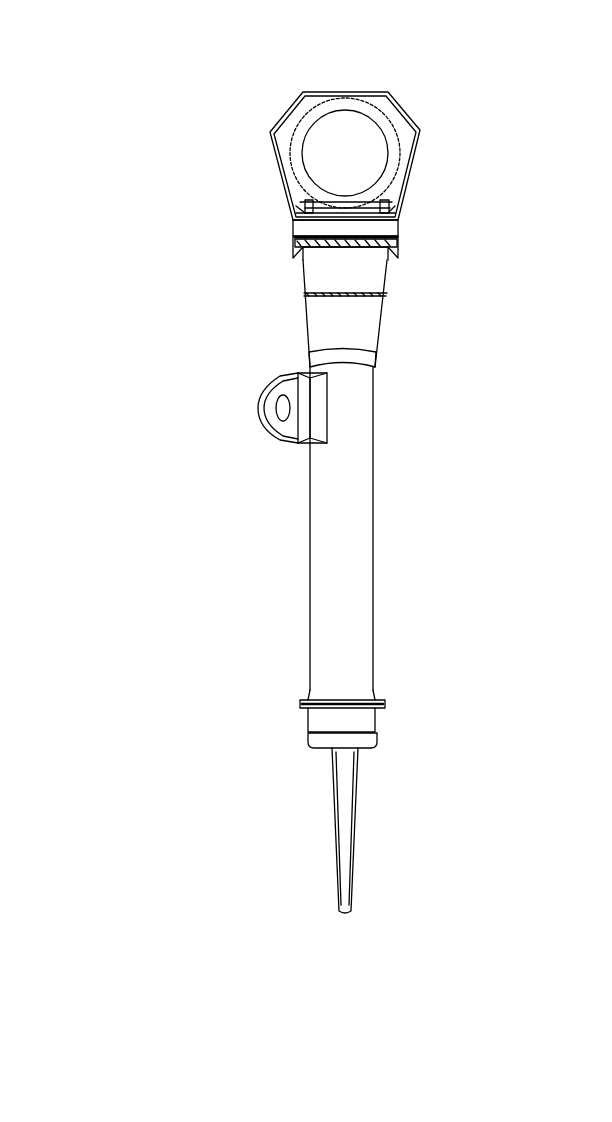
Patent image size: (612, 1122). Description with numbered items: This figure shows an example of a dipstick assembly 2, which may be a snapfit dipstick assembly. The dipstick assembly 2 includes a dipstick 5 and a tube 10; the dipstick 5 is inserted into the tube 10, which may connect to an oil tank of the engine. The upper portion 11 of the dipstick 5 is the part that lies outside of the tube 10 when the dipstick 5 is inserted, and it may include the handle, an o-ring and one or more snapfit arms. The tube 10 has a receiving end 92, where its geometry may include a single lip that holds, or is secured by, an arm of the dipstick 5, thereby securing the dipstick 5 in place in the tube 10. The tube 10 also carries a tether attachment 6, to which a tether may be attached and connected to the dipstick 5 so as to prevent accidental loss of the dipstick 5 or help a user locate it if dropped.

The dipstick assembly 2 is at (168, 82).
The dipstick 5 is at (278, 157).
The upper portion 11 is at (427, 88).
The receiving end 92 is at (387, 277).
The tube 10 is at (373, 480).
The tether attachment 6 is at (267, 410).